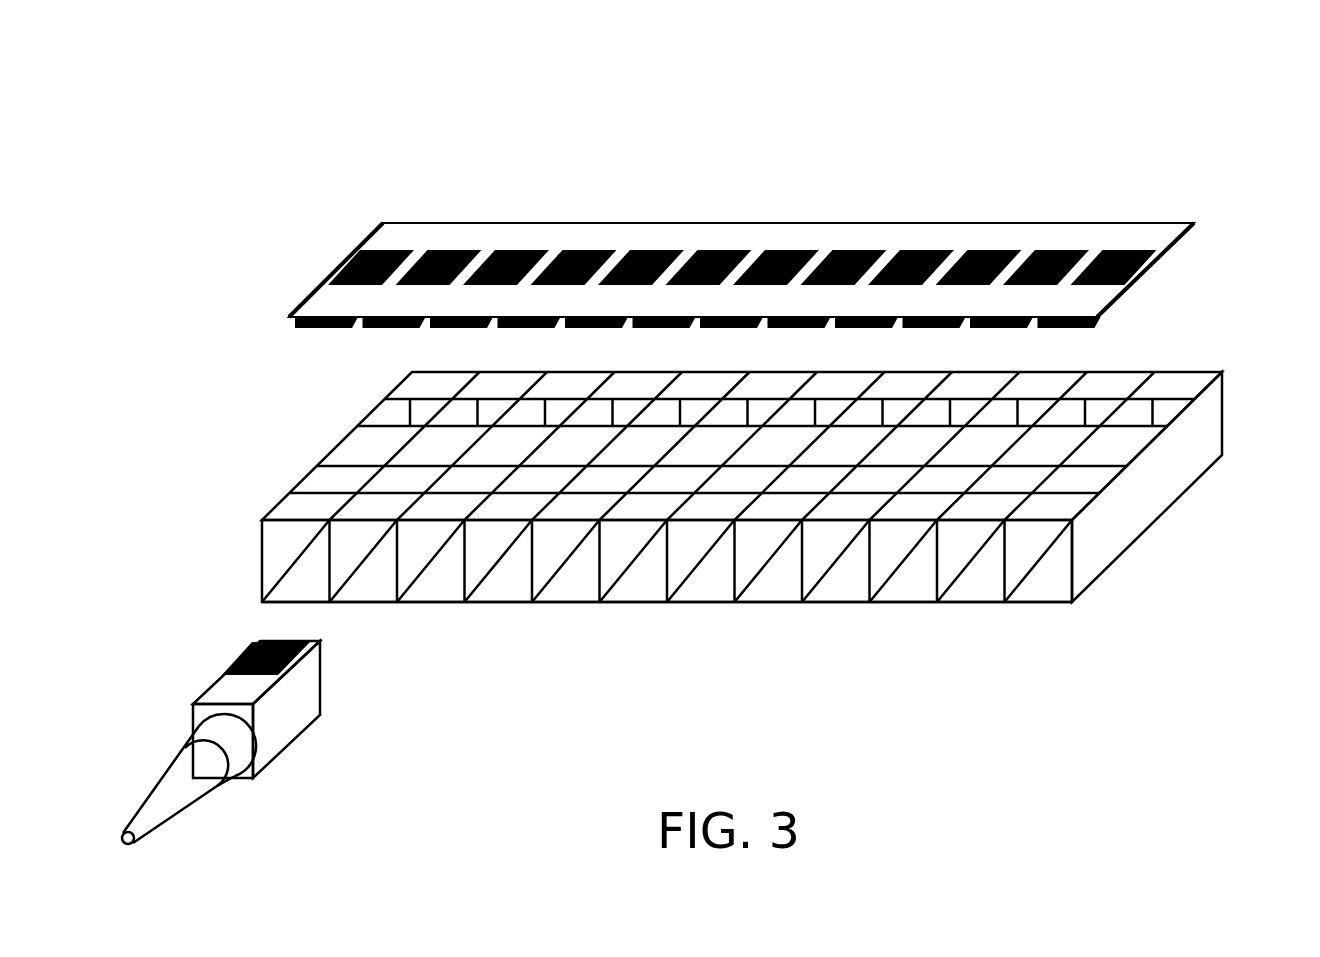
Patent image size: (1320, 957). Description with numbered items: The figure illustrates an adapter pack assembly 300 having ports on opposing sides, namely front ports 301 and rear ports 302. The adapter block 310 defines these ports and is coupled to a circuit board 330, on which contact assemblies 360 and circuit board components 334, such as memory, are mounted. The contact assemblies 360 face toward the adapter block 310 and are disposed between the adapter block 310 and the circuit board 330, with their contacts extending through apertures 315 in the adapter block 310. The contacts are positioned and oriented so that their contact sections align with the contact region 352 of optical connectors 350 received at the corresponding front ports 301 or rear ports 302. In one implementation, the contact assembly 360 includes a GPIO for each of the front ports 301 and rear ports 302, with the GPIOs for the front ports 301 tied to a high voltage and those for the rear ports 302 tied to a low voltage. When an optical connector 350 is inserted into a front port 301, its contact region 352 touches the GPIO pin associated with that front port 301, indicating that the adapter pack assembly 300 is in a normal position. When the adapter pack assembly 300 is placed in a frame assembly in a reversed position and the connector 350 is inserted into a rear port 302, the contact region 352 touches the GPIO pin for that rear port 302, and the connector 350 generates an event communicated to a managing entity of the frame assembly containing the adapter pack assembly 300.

The adapter pack assembly 300 is at (829, 140).
The circuit board 330 is at (1142, 230).
The circuit board components 334 is at (373, 260).
The contact assemblies 360 is at (338, 327).
The rear ports 302 is at (1102, 372).
The apertures 315 is at (1178, 402).
The adapter block 310 is at (774, 493).
The front ports 301 is at (722, 603).
The optical connectors 350 is at (235, 718).
The contact region 352 is at (250, 657).